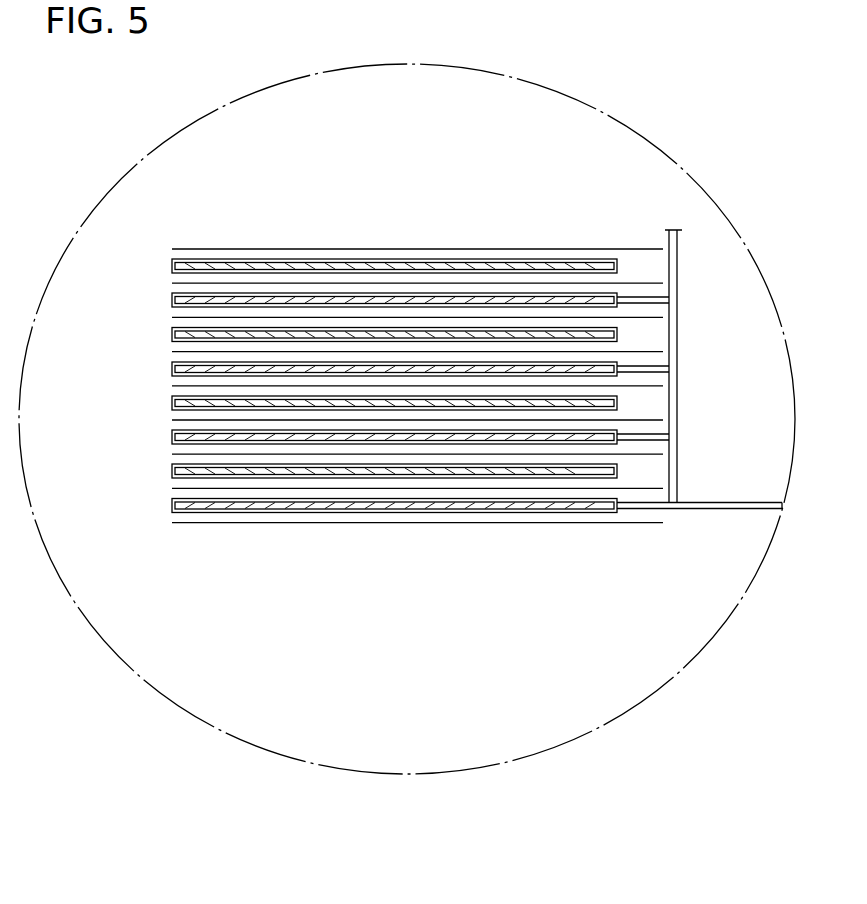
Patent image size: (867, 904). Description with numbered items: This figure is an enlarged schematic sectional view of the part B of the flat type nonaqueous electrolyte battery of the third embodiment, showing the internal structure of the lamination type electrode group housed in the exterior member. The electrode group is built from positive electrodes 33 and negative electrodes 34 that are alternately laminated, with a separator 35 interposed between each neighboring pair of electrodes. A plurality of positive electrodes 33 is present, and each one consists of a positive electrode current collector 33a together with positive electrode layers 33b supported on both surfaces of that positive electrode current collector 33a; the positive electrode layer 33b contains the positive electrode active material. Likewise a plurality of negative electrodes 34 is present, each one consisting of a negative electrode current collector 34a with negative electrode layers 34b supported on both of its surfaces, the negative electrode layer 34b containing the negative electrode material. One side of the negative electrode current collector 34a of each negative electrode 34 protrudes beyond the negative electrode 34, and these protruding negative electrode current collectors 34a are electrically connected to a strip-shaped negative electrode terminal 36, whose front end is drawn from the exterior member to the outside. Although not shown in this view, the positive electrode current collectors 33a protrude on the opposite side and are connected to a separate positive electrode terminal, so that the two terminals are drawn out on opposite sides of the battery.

The positive electrode 33 is at (335, 390).
The positive electrode current collector 33a is at (175, 471).
The positive electrode layer 33b is at (175, 465).
The negative electrode 34 is at (418, 440).
The negative electrode current collector 34a is at (645, 298).
The negative electrode layer 34b is at (175, 499).
The separator 35 is at (484, 249).
The negative electrode terminal 36 is at (727, 510).
The part B is at (660, 686).